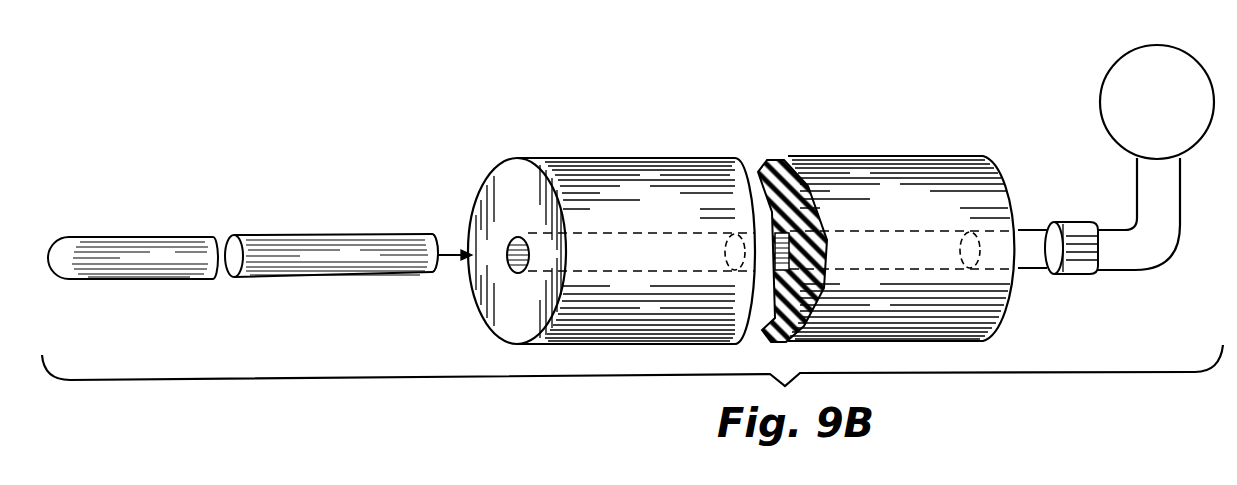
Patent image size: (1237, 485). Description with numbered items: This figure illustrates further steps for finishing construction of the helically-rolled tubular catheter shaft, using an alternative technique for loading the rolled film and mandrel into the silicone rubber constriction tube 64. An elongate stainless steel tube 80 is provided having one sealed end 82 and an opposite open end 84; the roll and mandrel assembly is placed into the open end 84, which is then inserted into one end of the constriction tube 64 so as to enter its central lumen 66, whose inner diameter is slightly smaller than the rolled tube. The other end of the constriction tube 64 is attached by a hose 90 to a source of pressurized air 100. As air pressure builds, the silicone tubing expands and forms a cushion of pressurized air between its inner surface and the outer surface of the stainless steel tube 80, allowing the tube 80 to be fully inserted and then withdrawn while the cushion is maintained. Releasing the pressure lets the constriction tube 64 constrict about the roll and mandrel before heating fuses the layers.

The constriction tube 64 is at (682, 158).
The central lumen 66 is at (507, 251).
The stainless steel tube 80 is at (278, 251).
The sealed end 82 is at (47, 246).
The open end 84 is at (433, 259).
The hose 90 is at (1127, 262).
The source of pressurized air 100 is at (1157, 102).